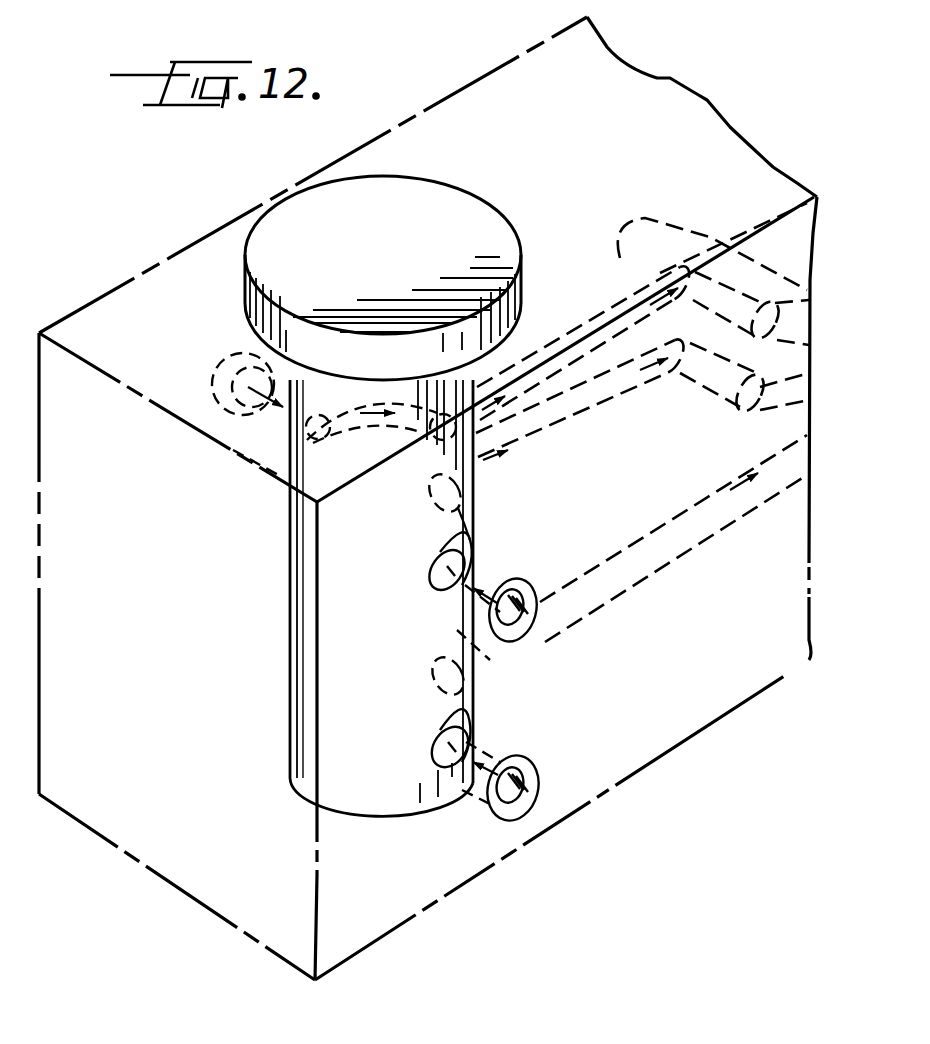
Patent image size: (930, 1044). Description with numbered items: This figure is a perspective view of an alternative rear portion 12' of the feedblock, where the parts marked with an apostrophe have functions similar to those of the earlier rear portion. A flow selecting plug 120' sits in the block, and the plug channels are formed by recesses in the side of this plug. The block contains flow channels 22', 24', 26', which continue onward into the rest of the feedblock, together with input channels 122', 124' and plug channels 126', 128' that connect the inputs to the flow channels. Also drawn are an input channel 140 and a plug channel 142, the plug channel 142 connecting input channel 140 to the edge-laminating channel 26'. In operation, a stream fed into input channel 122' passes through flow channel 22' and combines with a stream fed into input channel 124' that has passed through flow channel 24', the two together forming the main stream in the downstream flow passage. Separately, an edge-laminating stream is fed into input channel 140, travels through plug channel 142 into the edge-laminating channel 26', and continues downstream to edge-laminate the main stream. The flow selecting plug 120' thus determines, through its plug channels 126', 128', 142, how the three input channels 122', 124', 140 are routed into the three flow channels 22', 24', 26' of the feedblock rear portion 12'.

The alternative rear portion of feedblock 12' is at (633, 107).
The flow selecting plug 120' is at (362, 488).
The input channel 122' is at (219, 415).
The plug channel 126' is at (381, 441).
The flow channel 22' is at (643, 311).
The flow channel 24' is at (642, 399).
The edge-laminating channel 26' is at (673, 538).
The plug channel 128' is at (490, 504).
The input channel 124' is at (498, 596).
The plug channel 142 is at (468, 728).
The input channel 140 is at (540, 790).